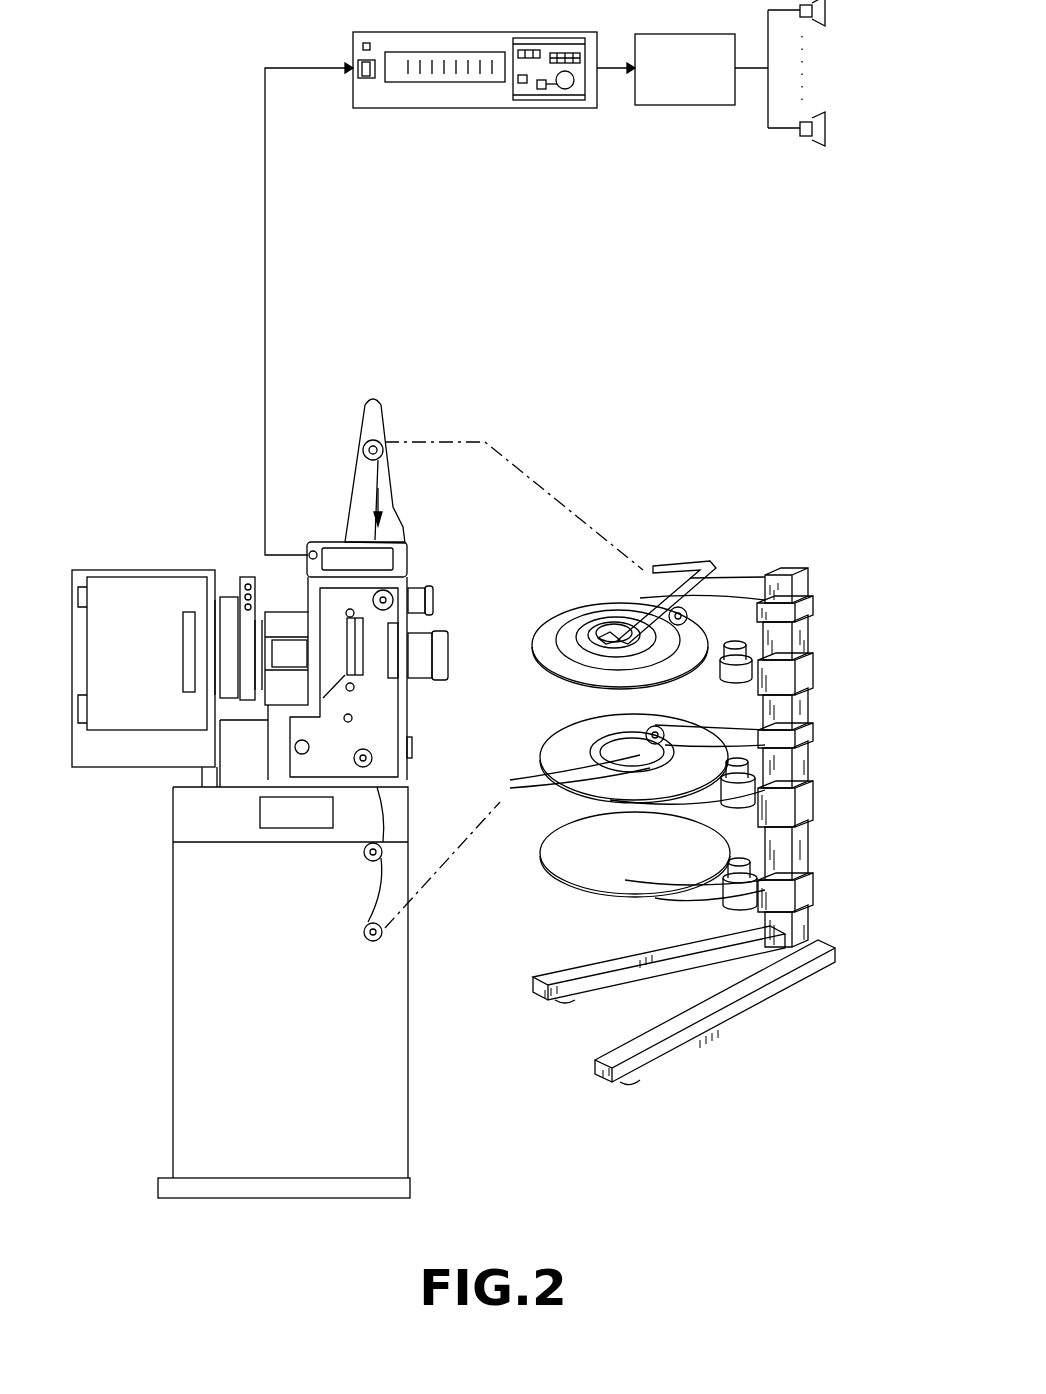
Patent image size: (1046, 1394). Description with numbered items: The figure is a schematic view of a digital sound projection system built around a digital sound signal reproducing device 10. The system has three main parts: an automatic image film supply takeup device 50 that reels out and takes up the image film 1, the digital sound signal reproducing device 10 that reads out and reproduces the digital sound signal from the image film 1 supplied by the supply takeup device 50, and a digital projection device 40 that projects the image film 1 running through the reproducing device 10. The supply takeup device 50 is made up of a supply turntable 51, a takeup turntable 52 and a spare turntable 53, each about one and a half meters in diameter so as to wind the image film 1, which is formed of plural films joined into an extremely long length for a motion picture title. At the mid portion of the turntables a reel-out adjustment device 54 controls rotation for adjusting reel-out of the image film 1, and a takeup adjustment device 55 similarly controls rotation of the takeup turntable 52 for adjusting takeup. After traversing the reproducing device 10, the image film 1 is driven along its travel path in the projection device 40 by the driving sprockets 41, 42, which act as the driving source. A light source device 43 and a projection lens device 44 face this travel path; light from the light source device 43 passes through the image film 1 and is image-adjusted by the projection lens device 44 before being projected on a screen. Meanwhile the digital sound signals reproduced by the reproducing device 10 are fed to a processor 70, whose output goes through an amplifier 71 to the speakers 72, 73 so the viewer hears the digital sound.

The image film 1 is at (442, 440).
The digital sound signal reproducing device 10 is at (312, 541).
The digital projection device 40 is at (152, 850).
The driving sprocket 41 is at (390, 598).
The driving sprocket 42 is at (372, 760).
The light source device 43 is at (143, 585).
The projection lens device 44 is at (440, 633).
The automatic image film supply takeup device 50 is at (792, 530).
The supply turntable 51 is at (787, 630).
The takeup turntable 52 is at (792, 770).
The spare turntable 53 is at (583, 880).
The reel-out adjustment device 54 is at (603, 620).
The takeup adjustment device 55 is at (610, 742).
The processor 70 is at (477, 108).
The amplifier 71 is at (692, 105).
The speaker 72 is at (830, 9).
The speaker 73 is at (830, 127).